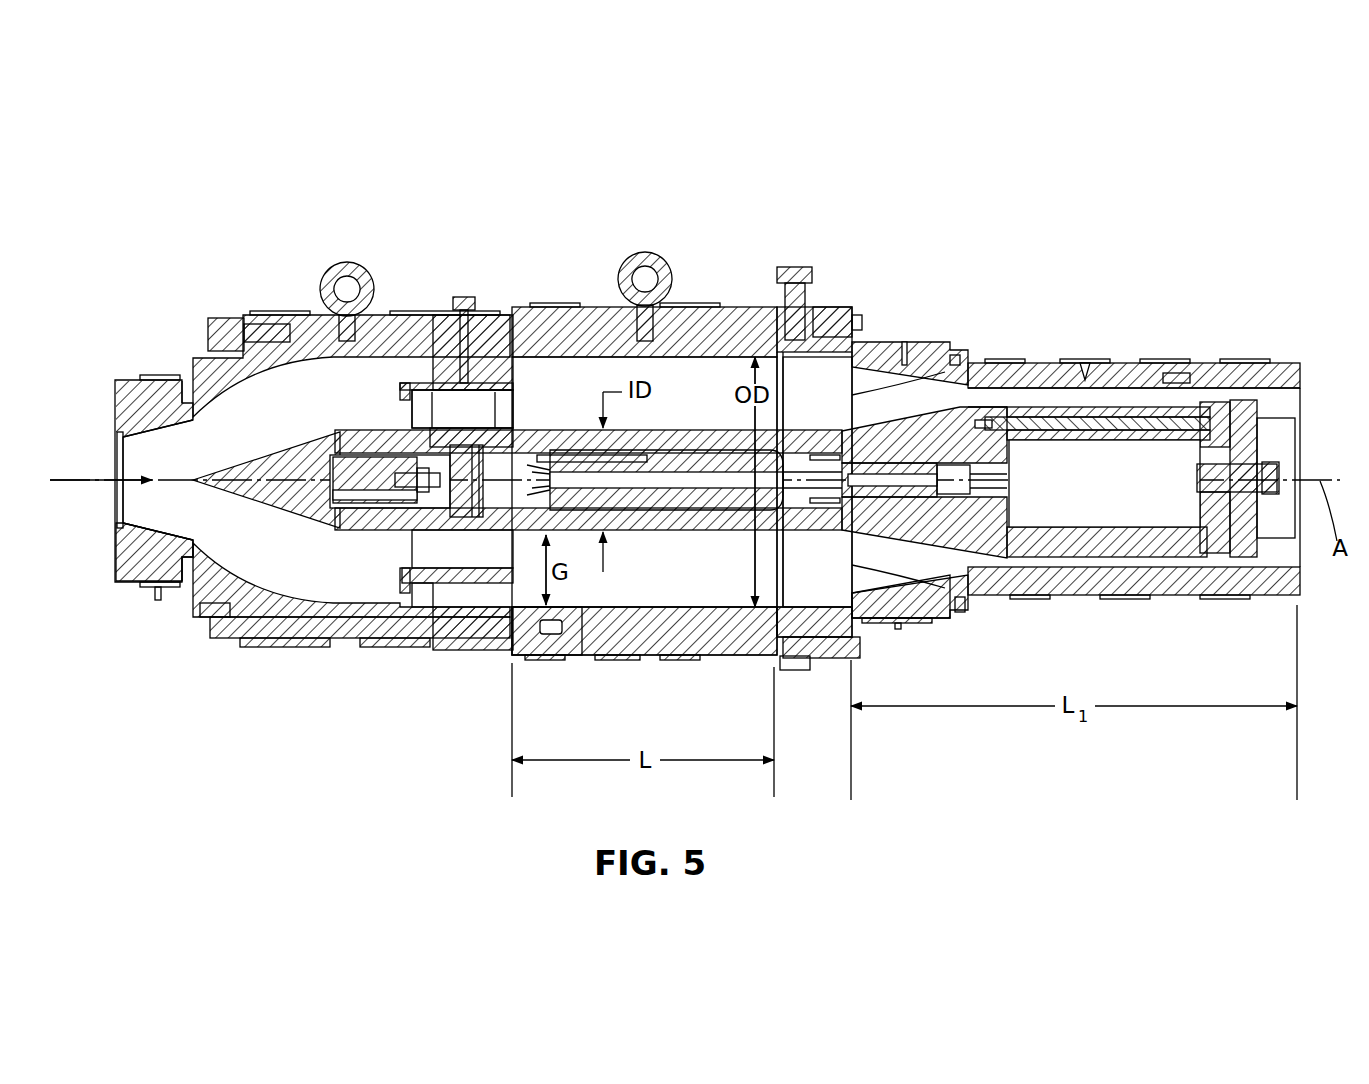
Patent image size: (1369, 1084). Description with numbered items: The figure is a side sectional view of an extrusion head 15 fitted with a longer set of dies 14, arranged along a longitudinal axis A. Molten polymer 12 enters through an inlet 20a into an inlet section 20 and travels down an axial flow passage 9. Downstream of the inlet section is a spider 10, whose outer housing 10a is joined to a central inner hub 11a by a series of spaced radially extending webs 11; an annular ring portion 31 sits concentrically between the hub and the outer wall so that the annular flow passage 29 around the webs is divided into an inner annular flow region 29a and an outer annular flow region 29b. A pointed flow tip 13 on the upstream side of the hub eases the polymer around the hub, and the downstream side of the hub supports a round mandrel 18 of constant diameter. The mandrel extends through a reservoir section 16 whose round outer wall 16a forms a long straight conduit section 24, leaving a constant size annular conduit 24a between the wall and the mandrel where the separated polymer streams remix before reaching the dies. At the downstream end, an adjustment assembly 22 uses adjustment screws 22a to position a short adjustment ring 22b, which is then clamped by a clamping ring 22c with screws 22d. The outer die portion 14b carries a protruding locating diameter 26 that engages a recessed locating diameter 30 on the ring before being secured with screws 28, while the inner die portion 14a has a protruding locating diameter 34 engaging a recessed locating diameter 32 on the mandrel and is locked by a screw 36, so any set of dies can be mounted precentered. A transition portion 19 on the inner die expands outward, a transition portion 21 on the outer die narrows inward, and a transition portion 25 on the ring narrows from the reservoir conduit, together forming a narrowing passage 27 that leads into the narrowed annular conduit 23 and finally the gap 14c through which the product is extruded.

The flow passage 9 is at (283, 568).
The spider 10 is at (448, 316).
The outer housing 10a is at (485, 318).
The webs 11 is at (457, 407).
The inner hub 11a is at (453, 423).
The molten polymer 12 is at (112, 478).
The flow tip 13 is at (240, 462).
The set of dies 14 is at (1130, 362).
The inner die portion 14a is at (1205, 505).
The outer die portion 14b is at (1247, 367).
The gap 14c is at (1305, 395).
The extrusion head 15 is at (680, 186).
The reservoir section 16 is at (682, 660).
The outer wall 16a is at (577, 662).
The mandrel 18 is at (690, 440).
The transition portion 19 is at (957, 525).
The inlet section 20 is at (282, 316).
The inlet 20a is at (118, 502).
The transition portion 21 is at (943, 620).
The adjustment assembly 22 is at (835, 308).
The adjustment screws 22a is at (790, 268).
The adjustment ring 22b is at (820, 355).
The clamping ring 22c is at (833, 671).
The screws 22d is at (862, 322).
The annular conduit 23 is at (993, 399).
The conduit section 24 is at (612, 606).
The annular conduit 24a is at (644, 482).
The transition portion 25 is at (818, 598).
The locating male structure 26 is at (858, 573).
The narrowing passage 27 is at (947, 345).
The screws 28 is at (966, 363).
The annular flow passage 29 is at (465, 551).
The inner annular flow region 29a is at (487, 592).
The outer annular flow region 29b is at (427, 595).
The locating female structure 30 is at (900, 620).
The annular ring portion 31 is at (407, 574).
The locating female structure 32 is at (850, 443).
The locating male structure 34 is at (861, 512).
The screw 36 is at (957, 475).